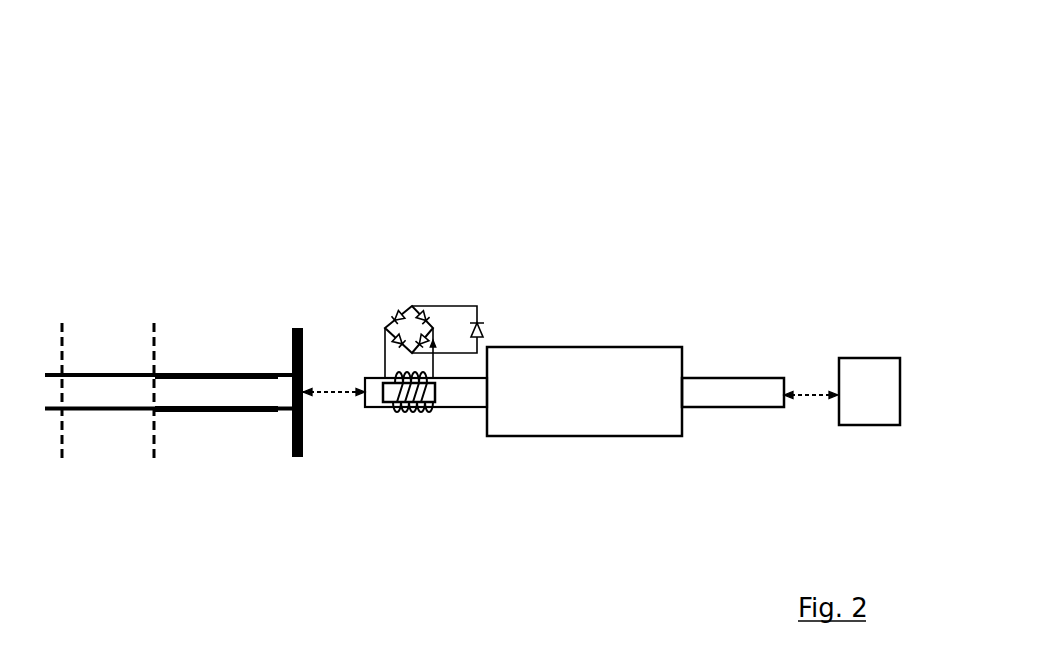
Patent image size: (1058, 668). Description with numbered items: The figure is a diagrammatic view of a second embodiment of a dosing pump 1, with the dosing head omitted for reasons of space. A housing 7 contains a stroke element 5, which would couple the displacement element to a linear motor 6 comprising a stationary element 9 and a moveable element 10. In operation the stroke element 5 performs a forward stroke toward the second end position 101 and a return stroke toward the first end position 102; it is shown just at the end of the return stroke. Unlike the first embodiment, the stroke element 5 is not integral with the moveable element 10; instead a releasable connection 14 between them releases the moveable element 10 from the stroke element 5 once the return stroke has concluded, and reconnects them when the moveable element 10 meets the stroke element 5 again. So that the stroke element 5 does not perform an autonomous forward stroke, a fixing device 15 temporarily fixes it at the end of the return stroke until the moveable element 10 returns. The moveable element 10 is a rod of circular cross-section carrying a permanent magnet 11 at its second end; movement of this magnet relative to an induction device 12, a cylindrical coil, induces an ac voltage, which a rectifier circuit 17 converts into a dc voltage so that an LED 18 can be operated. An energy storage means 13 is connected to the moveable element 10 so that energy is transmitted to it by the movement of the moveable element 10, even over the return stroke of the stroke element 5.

The dosing pump 1 is at (133, 147).
The stroke element 5 is at (202, 391).
The linear motor 6 is at (638, 277).
The housing 7 is at (120, 415).
The stationary element 9 is at (574, 435).
The moveable element 10 is at (720, 376).
The permanent magnet 11 is at (385, 408).
The induction device 12 is at (420, 411).
The energy storage means 13 is at (872, 420).
The releasable connection 14 is at (341, 386).
The fixing device 15 is at (290, 458).
The rectifier circuit 17 is at (415, 322).
The LED 18 is at (483, 324).
The second end position 101 is at (66, 313).
The first end position 102 is at (158, 313).